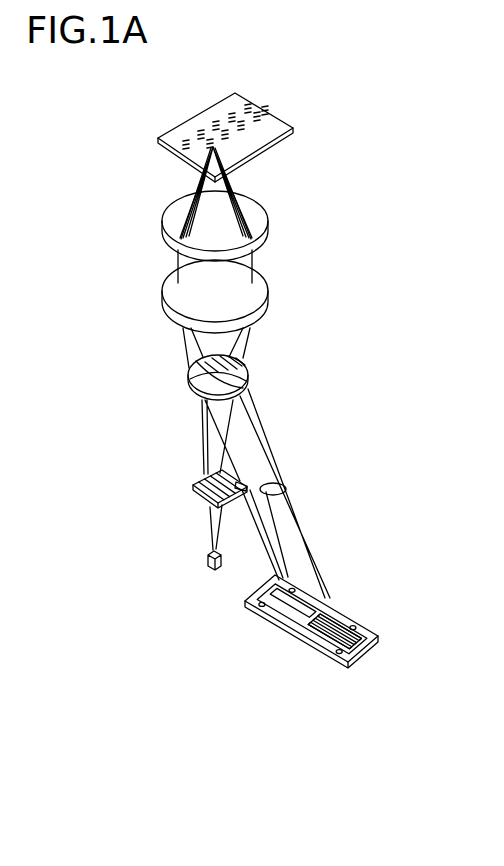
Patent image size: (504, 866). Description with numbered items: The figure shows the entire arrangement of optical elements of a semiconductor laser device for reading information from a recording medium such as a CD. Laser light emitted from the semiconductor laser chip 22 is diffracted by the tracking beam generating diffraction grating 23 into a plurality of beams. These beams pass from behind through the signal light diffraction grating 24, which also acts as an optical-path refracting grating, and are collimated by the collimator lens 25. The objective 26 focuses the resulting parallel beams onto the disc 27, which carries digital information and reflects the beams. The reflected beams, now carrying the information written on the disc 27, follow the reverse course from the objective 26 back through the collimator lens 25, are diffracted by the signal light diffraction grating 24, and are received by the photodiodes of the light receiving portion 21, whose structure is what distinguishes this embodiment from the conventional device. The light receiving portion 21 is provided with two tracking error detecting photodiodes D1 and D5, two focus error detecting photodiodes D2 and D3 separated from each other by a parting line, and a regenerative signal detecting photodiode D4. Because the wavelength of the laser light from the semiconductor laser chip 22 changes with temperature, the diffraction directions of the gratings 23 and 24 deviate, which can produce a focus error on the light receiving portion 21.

The light receiving portion 21 is at (311, 645).
The semiconductor laser chip 22 is at (207, 563).
The tracking beam generating diffraction grating 23 is at (200, 482).
The signal light diffraction grating 24 is at (188, 373).
The collimator lens 25 is at (176, 287).
The objective 26 is at (178, 215).
The disc 27 is at (182, 133).
The tracking error detecting photodiode D1 is at (320, 633).
The focus error detecting photodiode D2 is at (346, 647).
The focus error detecting photodiode D3 is at (363, 626).
The regenerative signal detecting photodiode D4 is at (260, 584).
The tracking error detecting photodiode D5 is at (340, 615).